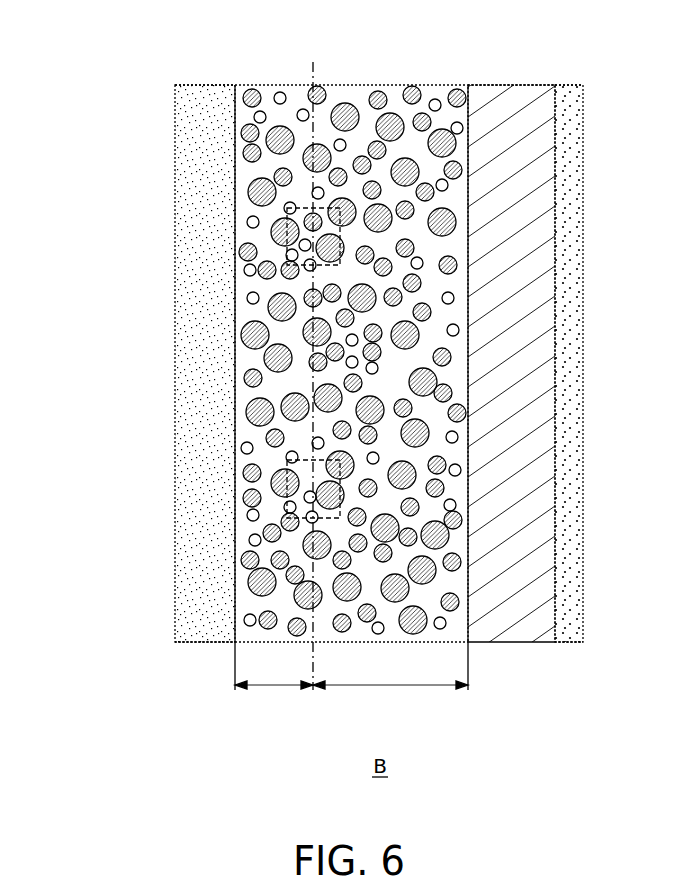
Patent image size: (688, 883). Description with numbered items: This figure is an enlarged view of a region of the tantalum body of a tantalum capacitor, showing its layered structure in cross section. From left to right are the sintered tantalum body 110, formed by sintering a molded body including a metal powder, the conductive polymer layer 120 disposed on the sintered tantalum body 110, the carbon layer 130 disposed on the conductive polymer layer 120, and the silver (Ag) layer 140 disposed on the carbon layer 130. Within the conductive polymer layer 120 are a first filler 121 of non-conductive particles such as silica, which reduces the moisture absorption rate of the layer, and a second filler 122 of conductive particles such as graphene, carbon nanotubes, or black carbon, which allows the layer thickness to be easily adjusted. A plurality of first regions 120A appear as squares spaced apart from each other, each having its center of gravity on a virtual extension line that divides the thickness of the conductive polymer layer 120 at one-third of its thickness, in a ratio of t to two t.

The sintered tantalum body 110 is at (200, 102).
The conductive polymer layer 120 is at (317, 365).
The first regions 120A is at (290, 258).
The first filler 121 is at (317, 88).
The second filler 122 is at (435, 99).
The carbon layer 130 is at (502, 100).
The silver (Ag) layer 140 is at (572, 100).